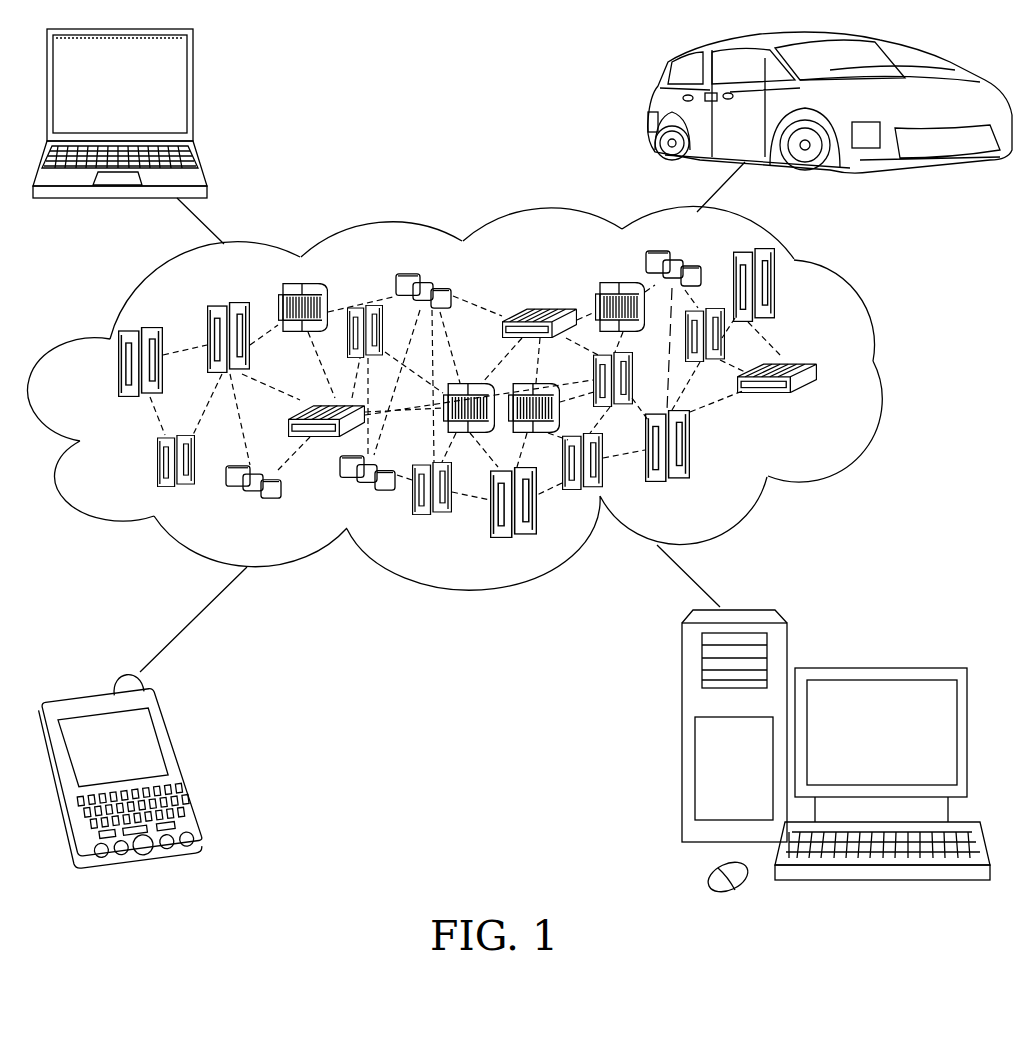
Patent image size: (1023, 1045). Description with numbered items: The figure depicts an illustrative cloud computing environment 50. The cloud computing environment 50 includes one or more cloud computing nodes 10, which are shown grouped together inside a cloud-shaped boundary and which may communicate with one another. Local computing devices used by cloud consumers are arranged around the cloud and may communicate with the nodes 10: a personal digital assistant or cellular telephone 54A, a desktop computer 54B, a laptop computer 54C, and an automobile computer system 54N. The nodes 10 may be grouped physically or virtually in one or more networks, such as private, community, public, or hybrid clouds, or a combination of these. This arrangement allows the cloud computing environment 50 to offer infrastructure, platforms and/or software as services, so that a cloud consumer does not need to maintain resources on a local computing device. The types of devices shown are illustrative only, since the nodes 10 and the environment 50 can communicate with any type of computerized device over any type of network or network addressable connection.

The cloud computing nodes 10 is at (824, 404).
The cloud computing environment 50 is at (878, 372).
The personal digital assistant (PDA) or cellular telephone 54A is at (180, 763).
The desktop computer 54B is at (878, 667).
The laptop computer 54C is at (191, 91).
The automobile computer system 54N is at (648, 108).